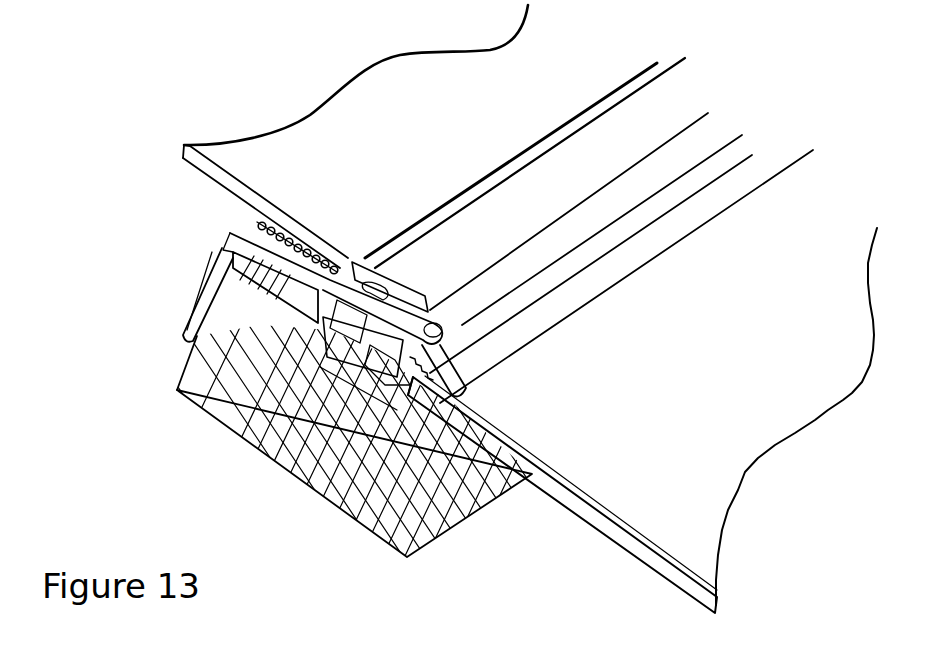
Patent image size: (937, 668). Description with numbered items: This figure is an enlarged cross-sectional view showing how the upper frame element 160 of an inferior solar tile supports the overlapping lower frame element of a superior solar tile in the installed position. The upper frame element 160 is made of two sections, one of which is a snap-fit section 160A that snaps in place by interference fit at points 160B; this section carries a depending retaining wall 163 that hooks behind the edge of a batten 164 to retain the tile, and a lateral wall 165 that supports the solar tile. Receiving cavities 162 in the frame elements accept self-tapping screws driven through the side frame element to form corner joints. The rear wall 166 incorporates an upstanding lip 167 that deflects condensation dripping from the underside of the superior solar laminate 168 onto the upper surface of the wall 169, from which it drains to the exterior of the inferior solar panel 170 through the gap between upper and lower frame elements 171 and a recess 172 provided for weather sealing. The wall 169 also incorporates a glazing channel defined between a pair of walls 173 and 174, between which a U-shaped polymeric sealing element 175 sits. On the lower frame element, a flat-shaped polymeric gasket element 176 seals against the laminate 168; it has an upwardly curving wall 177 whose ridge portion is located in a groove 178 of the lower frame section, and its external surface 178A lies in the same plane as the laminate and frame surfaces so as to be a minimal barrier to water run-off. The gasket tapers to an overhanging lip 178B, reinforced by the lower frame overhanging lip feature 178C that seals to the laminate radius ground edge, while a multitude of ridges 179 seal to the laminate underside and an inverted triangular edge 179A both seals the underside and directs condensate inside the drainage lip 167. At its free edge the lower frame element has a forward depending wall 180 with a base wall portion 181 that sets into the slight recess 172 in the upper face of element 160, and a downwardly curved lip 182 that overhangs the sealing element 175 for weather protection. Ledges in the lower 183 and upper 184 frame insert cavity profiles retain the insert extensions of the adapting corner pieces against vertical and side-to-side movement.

The upper frame element 160 is at (222, 233).
The snap-fit section 160A is at (225, 252).
The interference fit points 160B is at (226, 335).
The receiving cavities 162 is at (340, 266).
The depending retaining wall 163 is at (193, 310).
The batten 164 is at (217, 365).
The lateral wall 165 is at (230, 330).
The rear wall 166 is at (228, 252).
The upstanding lip 167 is at (245, 218).
The solar tile laminate 168 is at (262, 160).
The wall 169 is at (226, 230).
The inferior solar panel 170 is at (575, 442).
The gap between upper and lower frame elements 171 is at (362, 213).
The recess 172 is at (440, 295).
The glazing channel wall 173 is at (438, 300).
The glazing channel wall 174 is at (440, 447).
The U-shaped polymeric sealing element 175 is at (480, 384).
The flat-shaped polymeric gasket element 176 is at (294, 265).
The upwardly curving wall 177 is at (367, 265).
The groove 178 is at (428, 300).
The external surface of the gasket 178A is at (414, 228).
The overhanging lip 178B is at (366, 262).
The lower frame overhanging lip feature 178C is at (425, 248).
The ridges 179 is at (370, 262).
The inverted triangular edge 179A is at (242, 204).
The forward depending wall 180 is at (452, 338).
The base wall portion 181 is at (318, 303).
The downwardly curved lip 182 is at (472, 376).
The lower frame ledge 183 is at (262, 350).
The upper frame ledge 184 is at (432, 284).